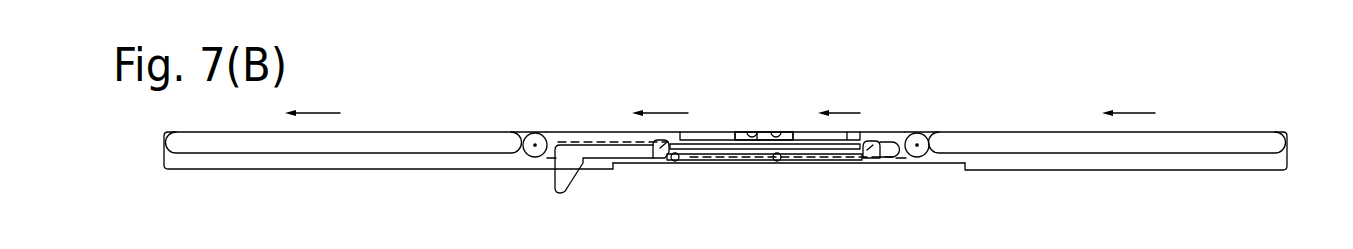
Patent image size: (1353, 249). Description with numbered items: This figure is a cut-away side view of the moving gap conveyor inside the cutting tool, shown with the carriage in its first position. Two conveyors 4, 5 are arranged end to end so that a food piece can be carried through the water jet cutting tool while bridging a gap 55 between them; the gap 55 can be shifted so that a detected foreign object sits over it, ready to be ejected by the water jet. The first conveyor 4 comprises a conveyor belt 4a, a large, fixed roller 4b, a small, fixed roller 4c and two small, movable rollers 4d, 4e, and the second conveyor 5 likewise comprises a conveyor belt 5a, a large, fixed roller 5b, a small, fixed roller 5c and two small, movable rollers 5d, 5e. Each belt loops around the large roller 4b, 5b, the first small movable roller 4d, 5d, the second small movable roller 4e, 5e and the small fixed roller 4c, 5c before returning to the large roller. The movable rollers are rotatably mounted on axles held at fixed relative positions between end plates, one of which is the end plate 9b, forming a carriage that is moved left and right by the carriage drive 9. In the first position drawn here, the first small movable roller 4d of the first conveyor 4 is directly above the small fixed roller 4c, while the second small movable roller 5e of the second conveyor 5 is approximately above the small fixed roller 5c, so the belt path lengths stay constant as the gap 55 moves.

The conveyor 4 is at (929, 116).
The conveyor belt 4a is at (885, 130).
The large, fixed roller 4b is at (927, 156).
The small, fixed roller 4c is at (778, 163).
The first small, movable roller 4d is at (781, 130).
The second small, movable roller 4e is at (866, 153).
The conveyor 5 is at (569, 114).
The conveyor belt 5a is at (597, 131).
The large, fixed roller 5b is at (528, 137).
The small, fixed roller 5c is at (674, 163).
The first small, movable roller 5d is at (751, 130).
The second small, movable roller 5e is at (654, 148).
The gap 55 is at (767, 116).
The carriage drive 9 is at (563, 192).
The end plate 9b is at (722, 164).